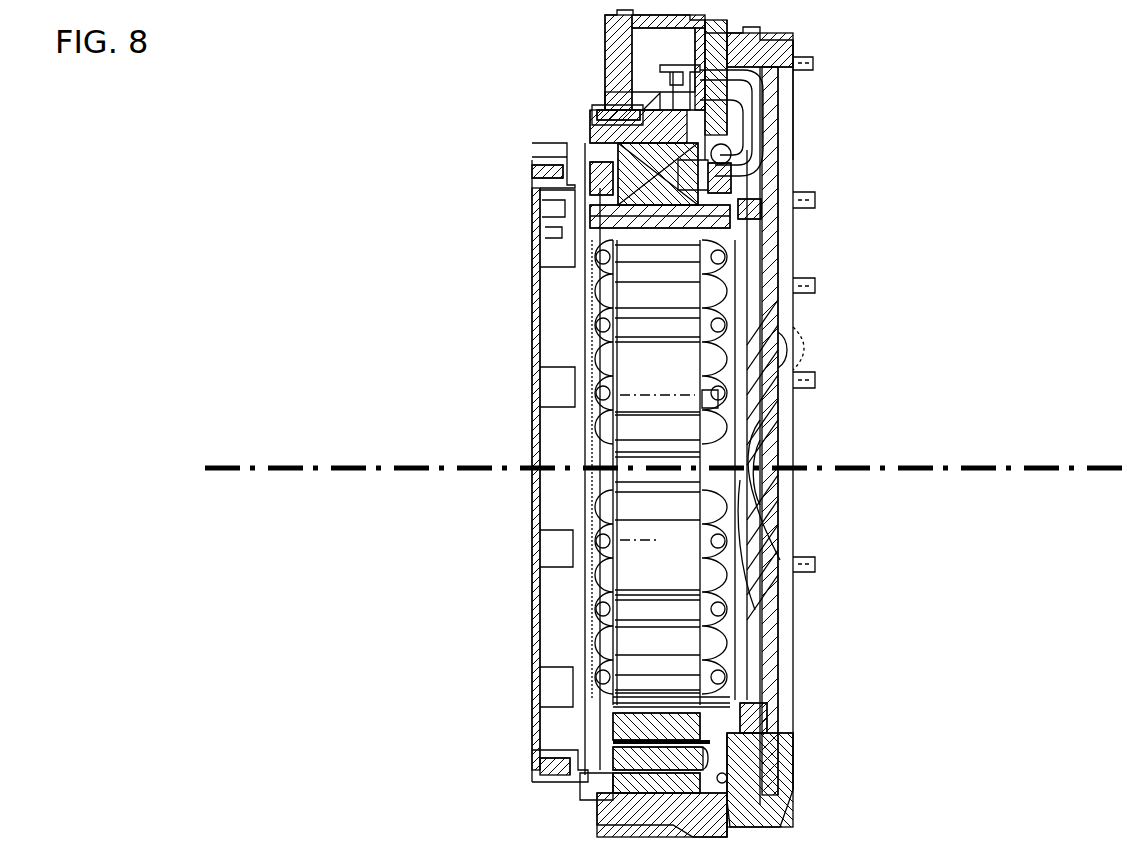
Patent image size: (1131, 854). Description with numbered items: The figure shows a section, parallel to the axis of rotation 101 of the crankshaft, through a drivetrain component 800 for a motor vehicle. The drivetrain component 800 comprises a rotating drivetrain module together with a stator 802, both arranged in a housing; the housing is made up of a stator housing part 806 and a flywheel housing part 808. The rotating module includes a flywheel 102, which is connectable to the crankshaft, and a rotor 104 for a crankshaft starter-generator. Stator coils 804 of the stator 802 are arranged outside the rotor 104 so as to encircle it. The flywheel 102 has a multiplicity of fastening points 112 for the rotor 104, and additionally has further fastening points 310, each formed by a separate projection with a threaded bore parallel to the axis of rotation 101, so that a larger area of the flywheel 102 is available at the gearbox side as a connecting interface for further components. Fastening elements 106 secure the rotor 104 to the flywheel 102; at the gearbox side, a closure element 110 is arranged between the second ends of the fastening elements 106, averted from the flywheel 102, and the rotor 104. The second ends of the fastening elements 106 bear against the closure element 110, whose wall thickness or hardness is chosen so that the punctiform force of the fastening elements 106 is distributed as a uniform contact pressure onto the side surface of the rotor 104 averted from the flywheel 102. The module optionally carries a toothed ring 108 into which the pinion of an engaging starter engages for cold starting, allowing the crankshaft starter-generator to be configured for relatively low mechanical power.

The drivetrain component 800 is at (97, 120).
The stator 802 is at (614, 158).
The stator housing part 806 is at (560, 157).
The rotor 104 is at (640, 204).
The fastening elements 106 is at (612, 228).
The stator coils 804 is at (615, 283).
The closure element 110 is at (620, 410).
The fastening points 112 is at (727, 221).
The flywheel 102 is at (753, 365).
The further fastening points 310 is at (720, 400).
The axis of rotation 101 is at (900, 470).
The toothed ring 108 is at (755, 717).
The flywheel housing part 808 is at (765, 792).